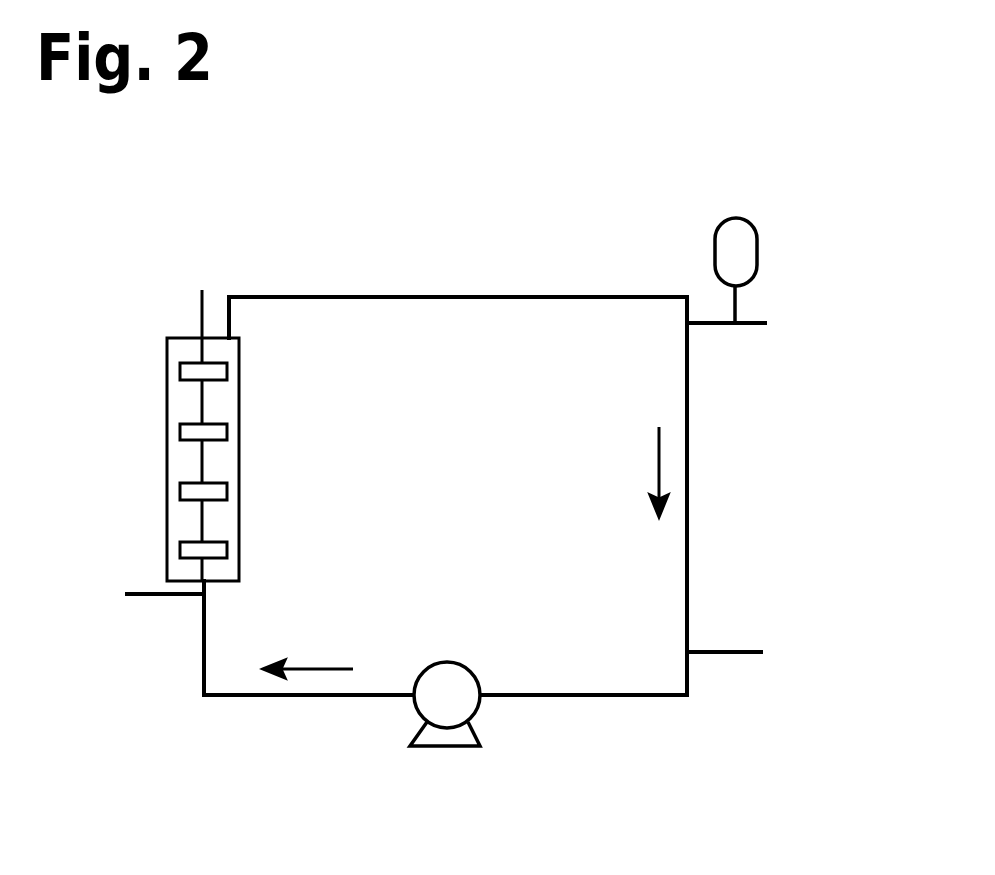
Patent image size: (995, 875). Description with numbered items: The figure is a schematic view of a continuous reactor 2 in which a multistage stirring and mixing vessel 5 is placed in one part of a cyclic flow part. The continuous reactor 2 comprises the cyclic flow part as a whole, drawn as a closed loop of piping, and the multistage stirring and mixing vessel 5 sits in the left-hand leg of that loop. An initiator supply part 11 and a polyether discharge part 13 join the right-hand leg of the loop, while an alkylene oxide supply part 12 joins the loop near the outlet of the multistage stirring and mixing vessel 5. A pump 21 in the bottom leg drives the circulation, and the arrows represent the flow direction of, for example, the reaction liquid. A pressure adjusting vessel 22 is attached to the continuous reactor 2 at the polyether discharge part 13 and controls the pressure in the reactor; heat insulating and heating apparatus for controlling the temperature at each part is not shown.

The continuous reactor 2 is at (292, 722).
The multistage stirring and mixing vessel 5 is at (239, 443).
The initiator supply part 11 is at (725, 655).
The alkylene oxide supply part 12 is at (168, 598).
The polyether discharge part 13 is at (755, 327).
The pump 21 is at (440, 747).
The pressure adjusting vessel 22 is at (714, 255).